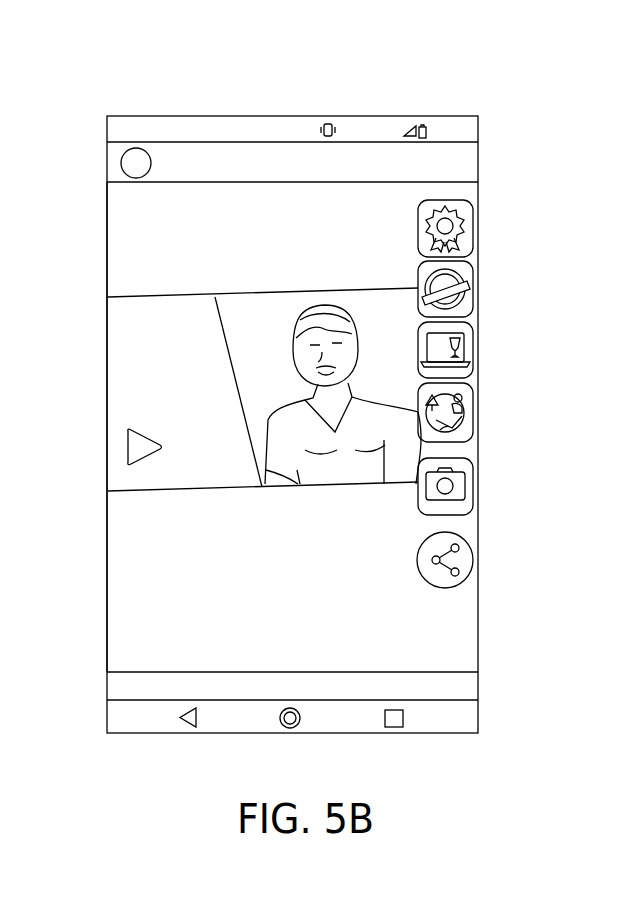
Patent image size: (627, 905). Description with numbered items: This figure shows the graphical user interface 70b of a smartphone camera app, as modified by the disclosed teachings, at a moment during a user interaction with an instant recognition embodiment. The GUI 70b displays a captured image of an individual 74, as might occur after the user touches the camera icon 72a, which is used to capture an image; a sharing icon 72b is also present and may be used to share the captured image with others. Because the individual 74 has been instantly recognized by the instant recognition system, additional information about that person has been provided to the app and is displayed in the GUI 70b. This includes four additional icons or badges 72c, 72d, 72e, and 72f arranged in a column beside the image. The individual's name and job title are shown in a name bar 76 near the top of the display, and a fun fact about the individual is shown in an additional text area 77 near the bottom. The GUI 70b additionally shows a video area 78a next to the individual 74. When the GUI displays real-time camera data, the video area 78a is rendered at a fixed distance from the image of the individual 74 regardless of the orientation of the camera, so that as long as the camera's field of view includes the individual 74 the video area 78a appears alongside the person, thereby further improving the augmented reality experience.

The graphical user interface 70b is at (120, 89).
The name bar 76 is at (107, 162).
The individual 74 is at (240, 340).
The video area 78a is at (107, 390).
The additional text area 77 is at (145, 685).
The camera icon 72a is at (473, 468).
The sharing icon 72b is at (473, 555).
The additional icon or badge 72c is at (473, 210).
The additional icon or badge 72d is at (473, 270).
The additional icon or badge 72e is at (473, 330).
The additional icon or badge 72f is at (473, 392).